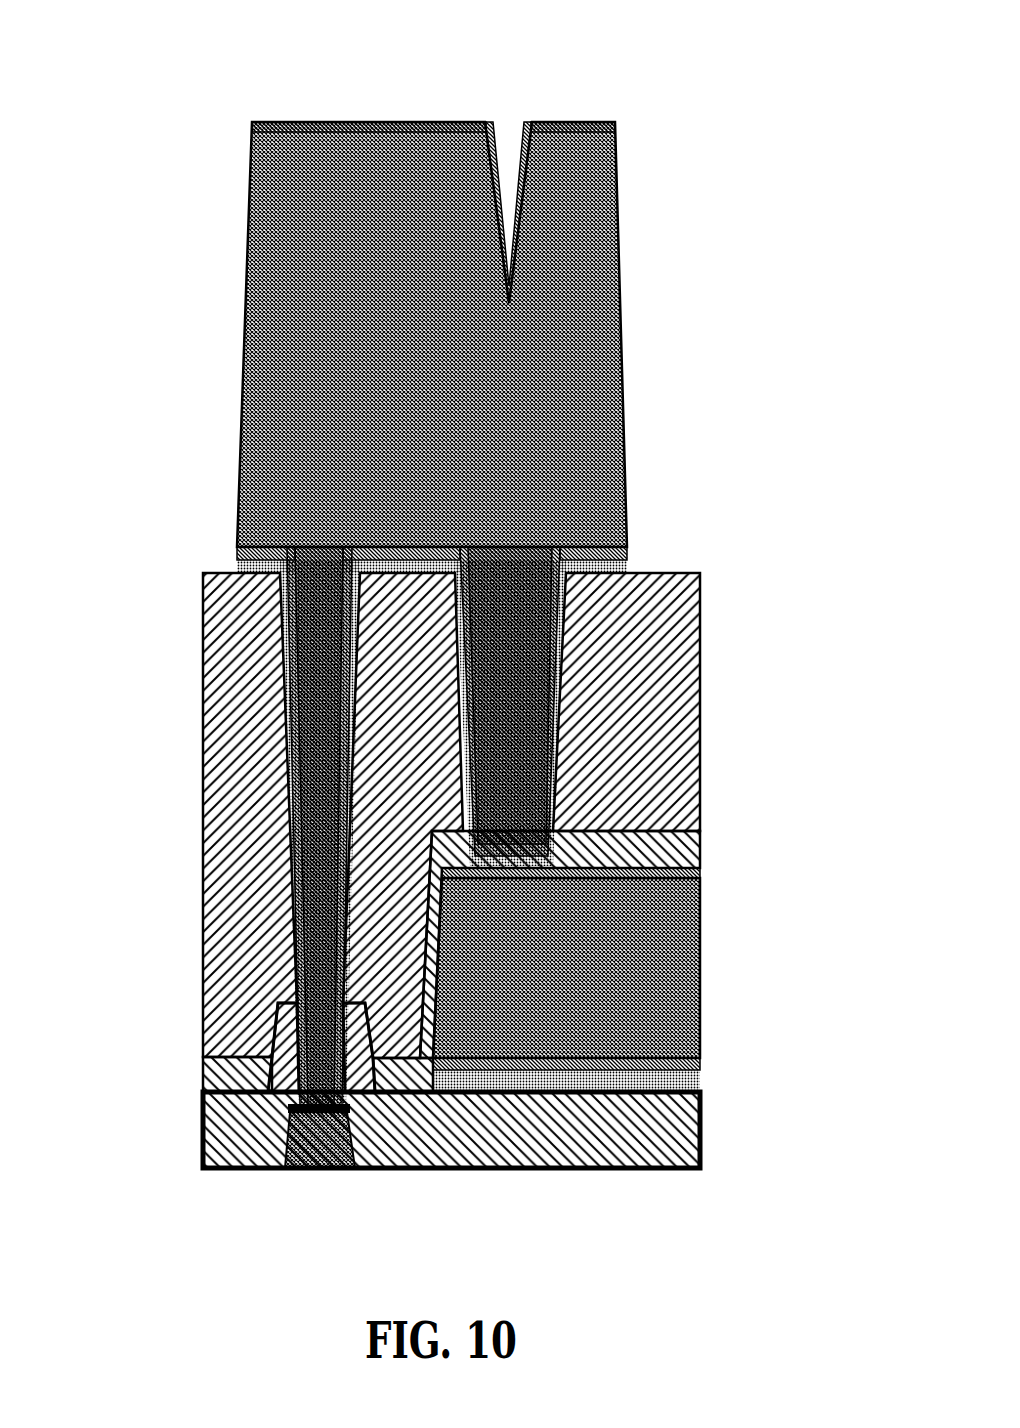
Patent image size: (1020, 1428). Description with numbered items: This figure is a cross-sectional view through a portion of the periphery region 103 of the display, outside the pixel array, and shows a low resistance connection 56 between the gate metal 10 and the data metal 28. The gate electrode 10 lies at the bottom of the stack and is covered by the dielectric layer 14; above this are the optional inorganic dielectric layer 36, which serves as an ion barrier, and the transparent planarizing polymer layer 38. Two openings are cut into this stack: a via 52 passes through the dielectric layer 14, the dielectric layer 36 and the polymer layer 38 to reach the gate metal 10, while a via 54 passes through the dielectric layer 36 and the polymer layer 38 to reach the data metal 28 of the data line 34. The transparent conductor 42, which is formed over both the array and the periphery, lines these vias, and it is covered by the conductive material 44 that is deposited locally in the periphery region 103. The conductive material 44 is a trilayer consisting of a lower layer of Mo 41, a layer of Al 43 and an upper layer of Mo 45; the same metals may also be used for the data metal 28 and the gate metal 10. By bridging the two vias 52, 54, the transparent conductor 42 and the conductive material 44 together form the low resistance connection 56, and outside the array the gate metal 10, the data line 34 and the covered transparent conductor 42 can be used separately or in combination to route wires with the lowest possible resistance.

The periphery region 103 is at (292, 53).
The low resistance connection 56 is at (458, 101).
The layer of Mo 45 is at (252, 126).
The conductive material 44 is at (638, 311).
The layer of Al 43 is at (238, 382).
The layer of Mo 41 is at (240, 565).
The transparent conductor 42 is at (627, 568).
The via 54 is at (560, 680).
The via 52 is at (290, 813).
The transparent planarizing polymer layer 38 is at (690, 780).
The dielectric layer 36 is at (700, 848).
The data metal 28 is at (700, 950).
The data line 34 is at (665, 993).
The dielectric layer 14 is at (205, 1110).
The gate electrode 10 is at (318, 1170).